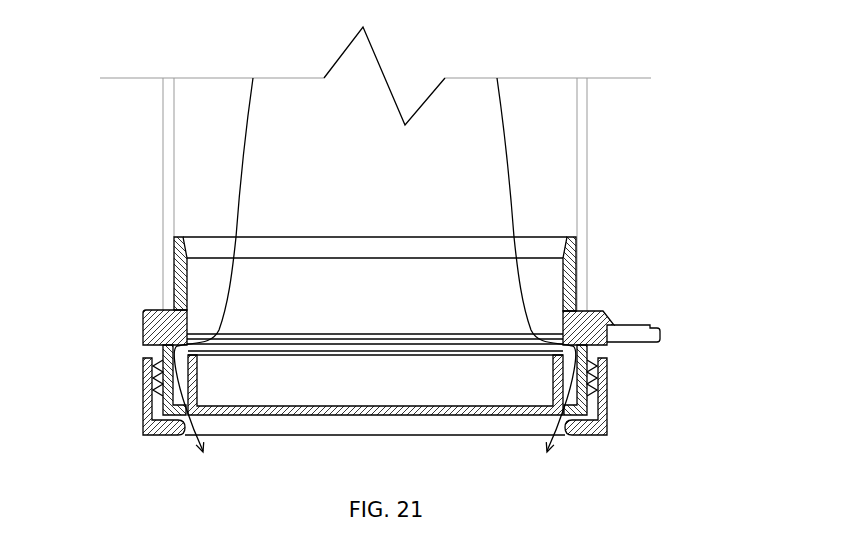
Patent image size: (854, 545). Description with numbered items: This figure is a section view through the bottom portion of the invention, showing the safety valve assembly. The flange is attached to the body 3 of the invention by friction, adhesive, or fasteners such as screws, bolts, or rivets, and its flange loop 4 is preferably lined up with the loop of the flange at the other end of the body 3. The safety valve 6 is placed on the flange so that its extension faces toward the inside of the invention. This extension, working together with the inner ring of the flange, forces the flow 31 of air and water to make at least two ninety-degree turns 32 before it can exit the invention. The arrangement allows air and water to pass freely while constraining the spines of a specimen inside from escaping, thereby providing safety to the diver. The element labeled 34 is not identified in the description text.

The body 3 is at (577, 120).
The flow 31 is at (227, 276).
The ninety-degree turns 32 is at (168, 340).
The flange loop 4 is at (641, 338).
The safety valve 6 is at (413, 423).
The threaded retaining ring 34 is at (197, 458).